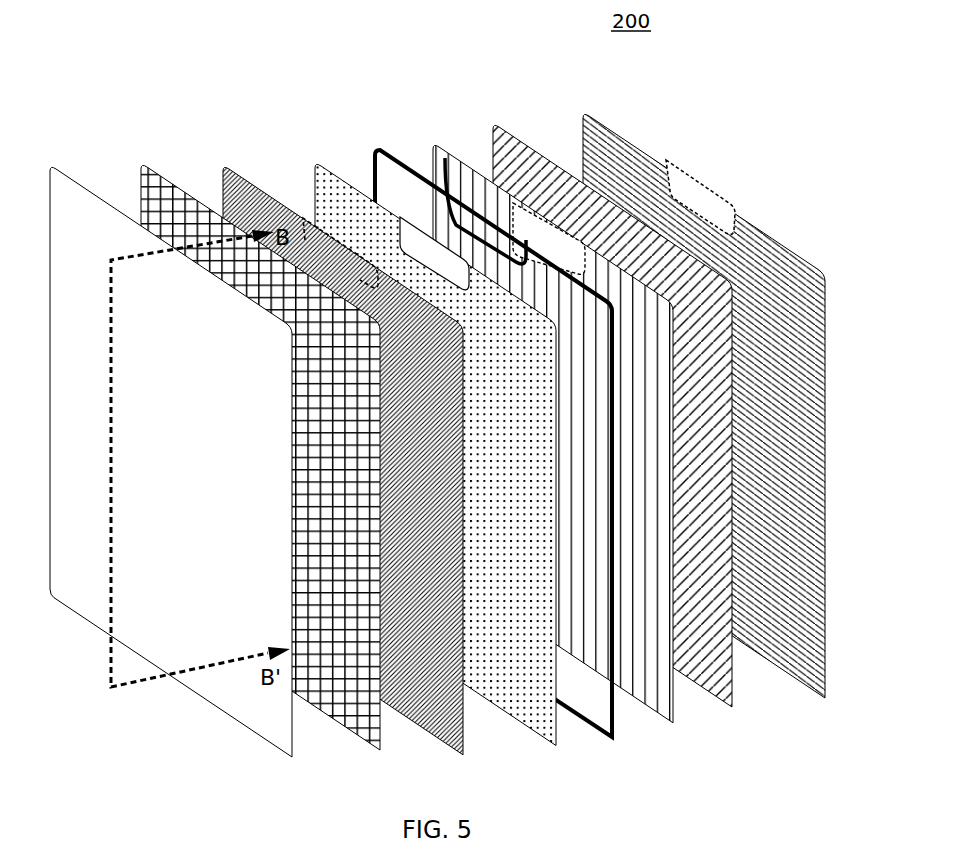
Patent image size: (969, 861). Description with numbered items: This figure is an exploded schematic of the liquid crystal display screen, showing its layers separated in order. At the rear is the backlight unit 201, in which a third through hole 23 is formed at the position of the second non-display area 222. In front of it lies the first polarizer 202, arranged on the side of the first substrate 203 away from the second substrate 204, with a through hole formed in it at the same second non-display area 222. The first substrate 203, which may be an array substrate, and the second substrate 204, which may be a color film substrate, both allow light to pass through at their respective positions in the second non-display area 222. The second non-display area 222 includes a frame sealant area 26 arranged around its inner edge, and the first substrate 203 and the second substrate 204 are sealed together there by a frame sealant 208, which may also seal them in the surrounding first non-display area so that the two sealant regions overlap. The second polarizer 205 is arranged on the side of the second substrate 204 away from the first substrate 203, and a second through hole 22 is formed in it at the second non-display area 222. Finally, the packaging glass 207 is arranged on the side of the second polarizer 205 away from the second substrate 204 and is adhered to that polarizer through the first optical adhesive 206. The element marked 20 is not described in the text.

The backlight unit 201 is at (600, 125).
The first polarizer 202 is at (736, 700).
The first substrate 203 is at (668, 723).
The second substrate 204 is at (332, 165).
The second polarizer 205 is at (250, 180).
The first optical adhesive 206 is at (165, 188).
The packaging glass 207 is at (78, 198).
The frame sealant 208 is at (602, 738).
The notch region 20 is at (575, 178).
The second through hole 22 is at (307, 217).
The third through hole 23 is at (676, 170).
The frame sealant area 26 is at (432, 182).
The second non-display area 222 is at (415, 230).